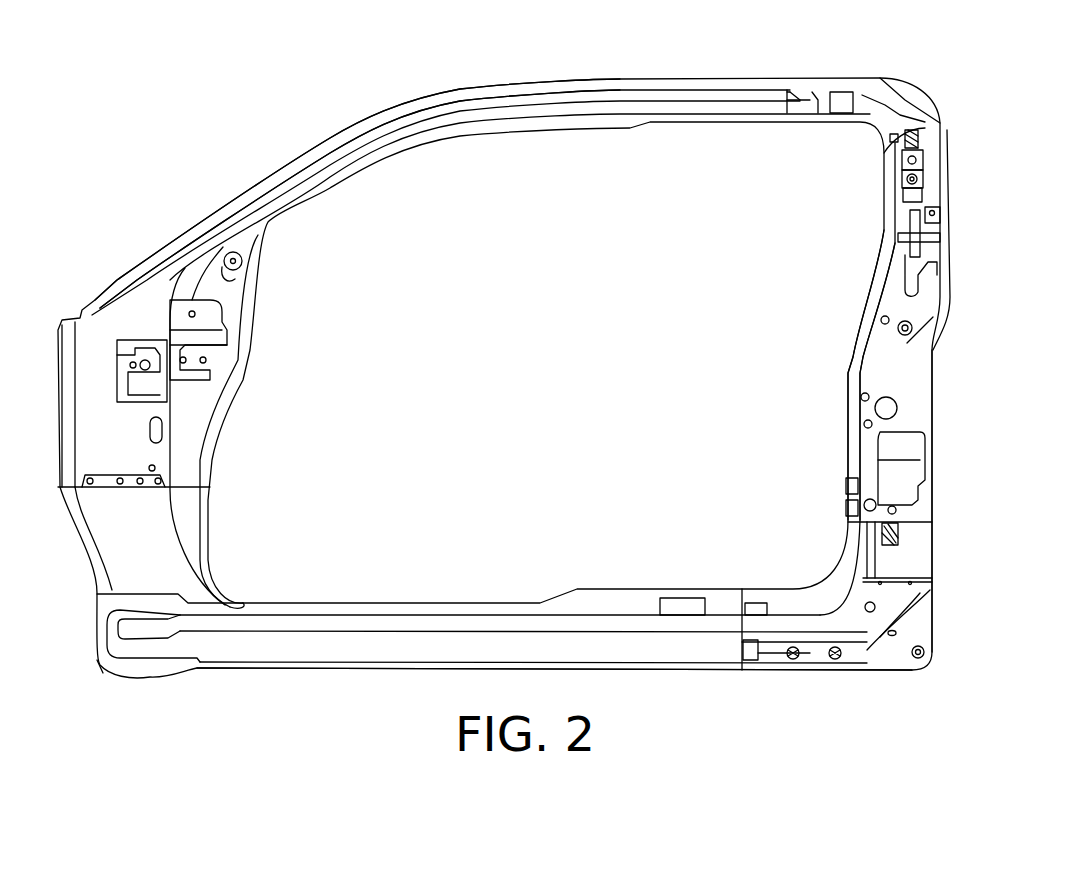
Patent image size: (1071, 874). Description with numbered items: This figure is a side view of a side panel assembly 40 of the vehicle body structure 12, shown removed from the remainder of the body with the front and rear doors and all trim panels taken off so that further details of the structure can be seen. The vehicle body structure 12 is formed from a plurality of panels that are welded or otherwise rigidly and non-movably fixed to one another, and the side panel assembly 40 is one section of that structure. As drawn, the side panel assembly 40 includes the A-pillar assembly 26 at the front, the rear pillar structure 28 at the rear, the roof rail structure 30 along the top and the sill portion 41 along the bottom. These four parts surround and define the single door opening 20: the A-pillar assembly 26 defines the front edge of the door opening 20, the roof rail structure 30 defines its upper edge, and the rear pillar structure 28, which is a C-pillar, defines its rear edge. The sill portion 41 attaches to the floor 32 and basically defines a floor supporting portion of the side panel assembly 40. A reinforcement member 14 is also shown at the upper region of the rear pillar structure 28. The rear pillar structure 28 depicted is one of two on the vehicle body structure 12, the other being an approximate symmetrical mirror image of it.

The vehicle body structure 12 is at (345, 47).
The reinforcement member 14 is at (940, 118).
The door opening 20 is at (848, 400).
The A-pillar assembly 26 is at (252, 207).
The rear pillar structure 28 is at (903, 378).
The roof rail structure 30 is at (590, 130).
The floor 32 is at (462, 603).
The side panel assembly 40 is at (682, 78).
The sill portion 41 is at (323, 645).